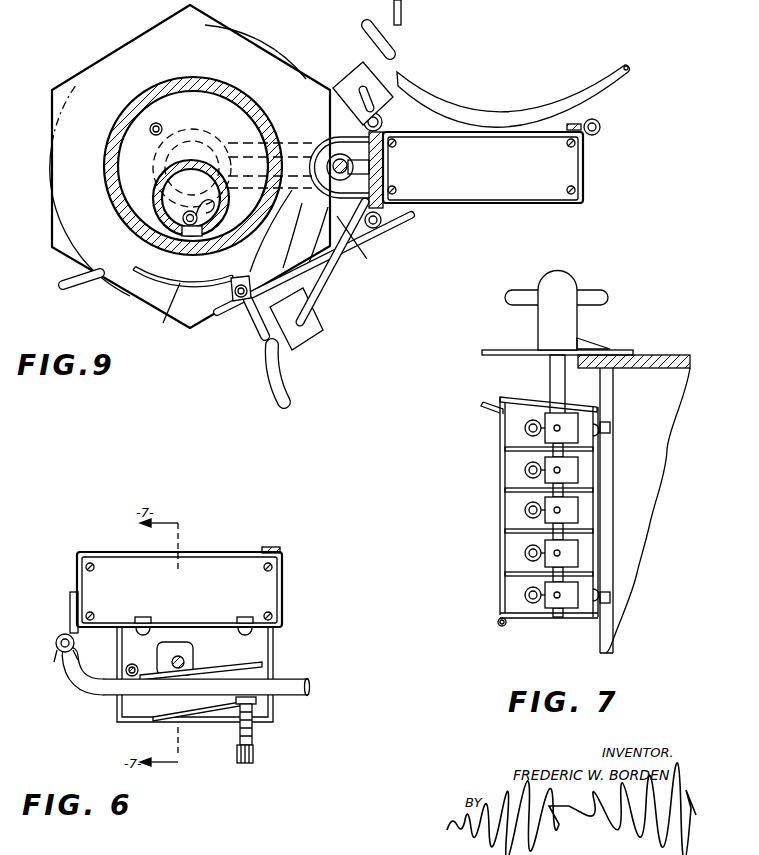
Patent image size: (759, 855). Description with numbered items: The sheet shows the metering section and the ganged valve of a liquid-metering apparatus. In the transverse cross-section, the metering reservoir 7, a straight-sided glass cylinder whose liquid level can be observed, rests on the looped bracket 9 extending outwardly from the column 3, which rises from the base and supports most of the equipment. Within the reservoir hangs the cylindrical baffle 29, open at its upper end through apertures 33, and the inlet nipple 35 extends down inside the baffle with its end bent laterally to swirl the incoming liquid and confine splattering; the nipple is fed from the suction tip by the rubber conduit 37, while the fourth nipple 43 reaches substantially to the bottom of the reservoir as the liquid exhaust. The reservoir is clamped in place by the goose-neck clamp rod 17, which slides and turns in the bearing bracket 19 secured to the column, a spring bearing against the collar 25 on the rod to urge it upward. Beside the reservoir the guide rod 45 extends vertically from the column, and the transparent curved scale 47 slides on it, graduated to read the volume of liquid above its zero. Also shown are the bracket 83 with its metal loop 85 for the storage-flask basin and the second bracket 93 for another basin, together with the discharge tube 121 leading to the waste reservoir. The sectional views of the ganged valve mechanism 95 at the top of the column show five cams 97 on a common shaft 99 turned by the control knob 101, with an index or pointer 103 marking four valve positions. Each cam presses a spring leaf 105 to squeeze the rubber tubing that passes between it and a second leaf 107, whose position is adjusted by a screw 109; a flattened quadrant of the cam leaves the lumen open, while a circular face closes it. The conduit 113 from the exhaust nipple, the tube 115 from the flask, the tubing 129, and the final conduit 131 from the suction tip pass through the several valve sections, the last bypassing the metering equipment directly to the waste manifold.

In FIG. 9, the column 3 is at (583, 197).
In FIG. 7, the column 3 is at (665, 460).
In FIG. 6, the column 3 is at (232, 552).
In FIG. 9, the metering reservoir 7 is at (118, 112).
In FIG. 9, the looped bracket 9 is at (226, 143).
In FIG. 9, the goose-neck clamp rod 17 is at (324, 222).
In FIG. 6, the goose-neck clamp rod 17 is at (56, 647).
In FIG. 9, the bearing bracket 19 is at (318, 143).
In FIG. 9, the collar 25 is at (343, 158).
In FIG. 9, the cylindrical baffle 29 is at (157, 207).
In FIG. 9, the apertures 33 is at (185, 228).
In FIG. 9, the inlet nipple 35 is at (213, 206).
In FIG. 9, the rubber conduit 37 is at (380, 228).
In FIG. 9, the fourth nipple 43 is at (160, 123).
In FIG. 9, the guide rod 45 is at (337, 265).
In FIG. 9, the transparent scale 47 is at (163, 323).
In FIG. 9, the bracket 83 is at (348, 75).
In FIG. 9, the metal loop 85 is at (390, 52).
In FIG. 9, the second bracket 93 is at (291, 403).
In FIG. 7, the ganged valve mechanism 95 is at (503, 530).
In FIG. 6, the ganged valve mechanism 95 is at (118, 719).
In FIG. 7, the cams 97 is at (580, 425).
In FIG. 6, the cams 97 is at (180, 640).
In FIG. 7, the common shaft 99 is at (550, 620).
In FIG. 6, the common shaft 99 is at (186, 655).
In FIG. 7, the control knob 101 is at (565, 275).
In FIG. 7, the index or pointer 103 is at (592, 340).
In FIG. 7, the spring leaf 105 is at (557, 415).
In FIG. 6, the spring leaf 105 is at (252, 668).
In FIG. 7, the second leaf 107 is at (503, 424).
In FIG. 6, the second leaf 107 is at (207, 707).
In FIG. 6, the screw 109 is at (255, 739).
In FIG. 7, the conduit 113 is at (537, 415).
In FIG. 7, the tube 115 is at (527, 598).
In FIG. 9, the discharge tube 121 is at (600, 127).
In FIG. 7, the discharge tube 121 is at (527, 472).
In FIG. 7, the tubing 129 is at (527, 512).
In FIG. 6, the tubing 129 is at (292, 682).
In FIG. 9, the final conduit 131 is at (382, 122).
In FIG. 7, the final conduit 131 is at (527, 556).
In FIG. 6, the final conduit 131 is at (90, 691).